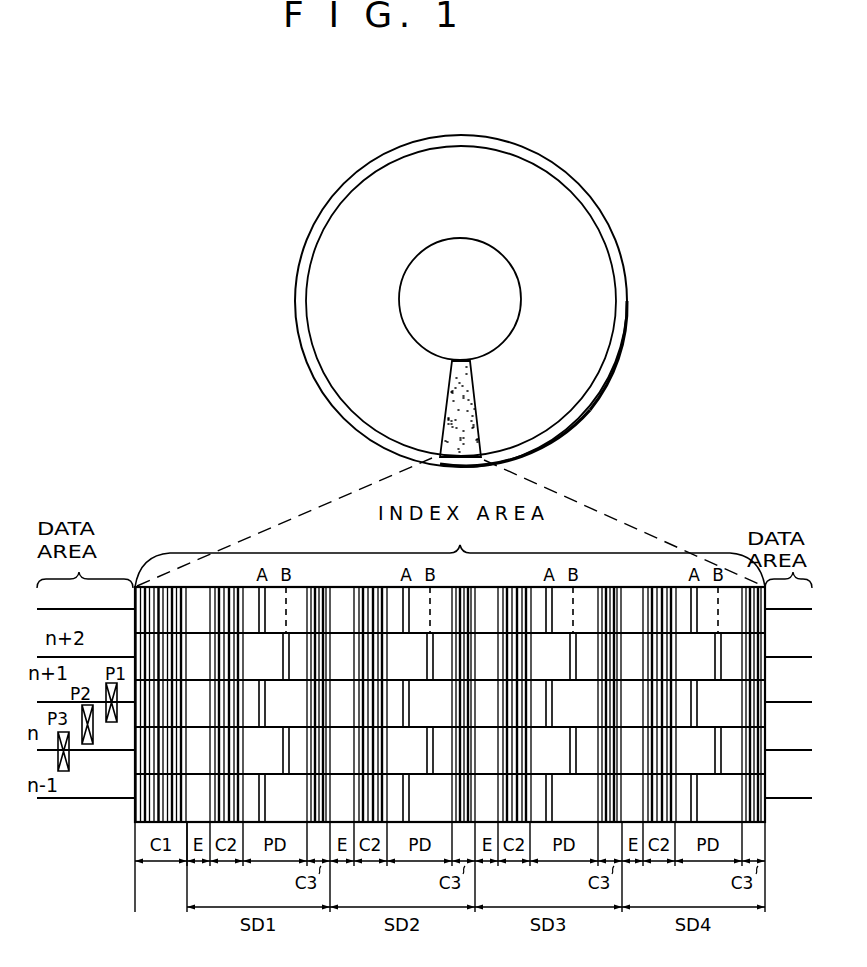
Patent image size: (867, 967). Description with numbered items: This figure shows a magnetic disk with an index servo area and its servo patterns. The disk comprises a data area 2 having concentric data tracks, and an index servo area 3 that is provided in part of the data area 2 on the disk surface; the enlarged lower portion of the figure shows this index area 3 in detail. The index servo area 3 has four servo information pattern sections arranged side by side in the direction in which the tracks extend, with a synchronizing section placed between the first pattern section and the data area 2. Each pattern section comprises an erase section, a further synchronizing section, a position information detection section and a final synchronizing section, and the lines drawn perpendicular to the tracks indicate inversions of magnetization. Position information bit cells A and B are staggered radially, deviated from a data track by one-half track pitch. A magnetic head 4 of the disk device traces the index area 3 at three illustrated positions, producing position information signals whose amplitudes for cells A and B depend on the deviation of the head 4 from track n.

The data area 2 is at (598, 318).
The index servo area 3 is at (470, 438).
The magnetic head 4 is at (617, 247).